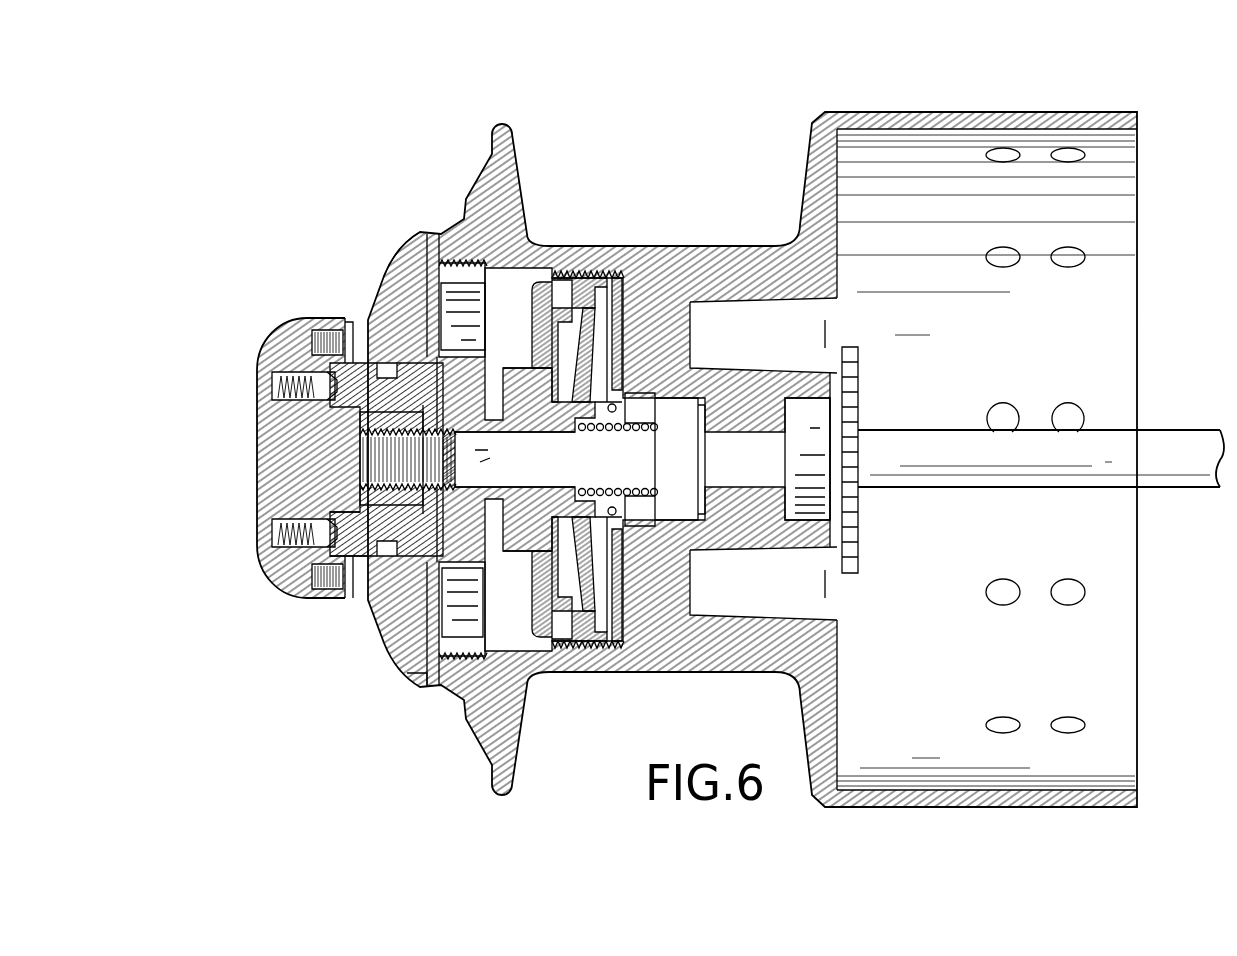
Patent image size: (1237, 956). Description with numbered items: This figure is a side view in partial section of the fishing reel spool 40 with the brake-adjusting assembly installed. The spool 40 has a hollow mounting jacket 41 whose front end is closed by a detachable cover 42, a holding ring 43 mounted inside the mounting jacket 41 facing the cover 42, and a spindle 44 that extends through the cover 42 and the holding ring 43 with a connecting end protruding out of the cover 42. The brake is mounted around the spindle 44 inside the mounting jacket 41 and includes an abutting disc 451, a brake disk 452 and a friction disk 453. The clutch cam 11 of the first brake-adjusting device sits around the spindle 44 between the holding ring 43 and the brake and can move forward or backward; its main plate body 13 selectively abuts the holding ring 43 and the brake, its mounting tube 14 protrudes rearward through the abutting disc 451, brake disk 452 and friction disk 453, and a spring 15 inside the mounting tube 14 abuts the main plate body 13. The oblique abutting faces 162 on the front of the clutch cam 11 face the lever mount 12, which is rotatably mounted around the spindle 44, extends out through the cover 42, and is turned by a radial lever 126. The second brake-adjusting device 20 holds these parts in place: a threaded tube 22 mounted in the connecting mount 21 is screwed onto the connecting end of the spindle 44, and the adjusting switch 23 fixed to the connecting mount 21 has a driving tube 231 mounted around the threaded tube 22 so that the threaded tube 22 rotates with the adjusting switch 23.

The clutch cam 11 is at (529, 558).
The lever mount 12 is at (330, 281).
The lever 126 is at (398, 262).
The main plate body 13 is at (553, 278).
The mounting tube 14 is at (620, 507).
The spring 15 is at (653, 430).
The abutting face 162 is at (500, 392).
The second brake-adjusting device 20 is at (241, 336).
The connecting mount 21 is at (345, 513).
The threaded tube 22 is at (358, 424).
The adjusting switch 23 is at (241, 516).
The driving tube 231 is at (367, 548).
The spool 40 is at (724, 156).
The mounting jacket 41 is at (732, 250).
The cover 42 is at (432, 673).
The holding ring 43 is at (542, 628).
The spindle 44 is at (1177, 442).
The abutting disc 451 is at (590, 275).
The brake disk 452 is at (607, 277).
The friction disk 453 is at (617, 610).